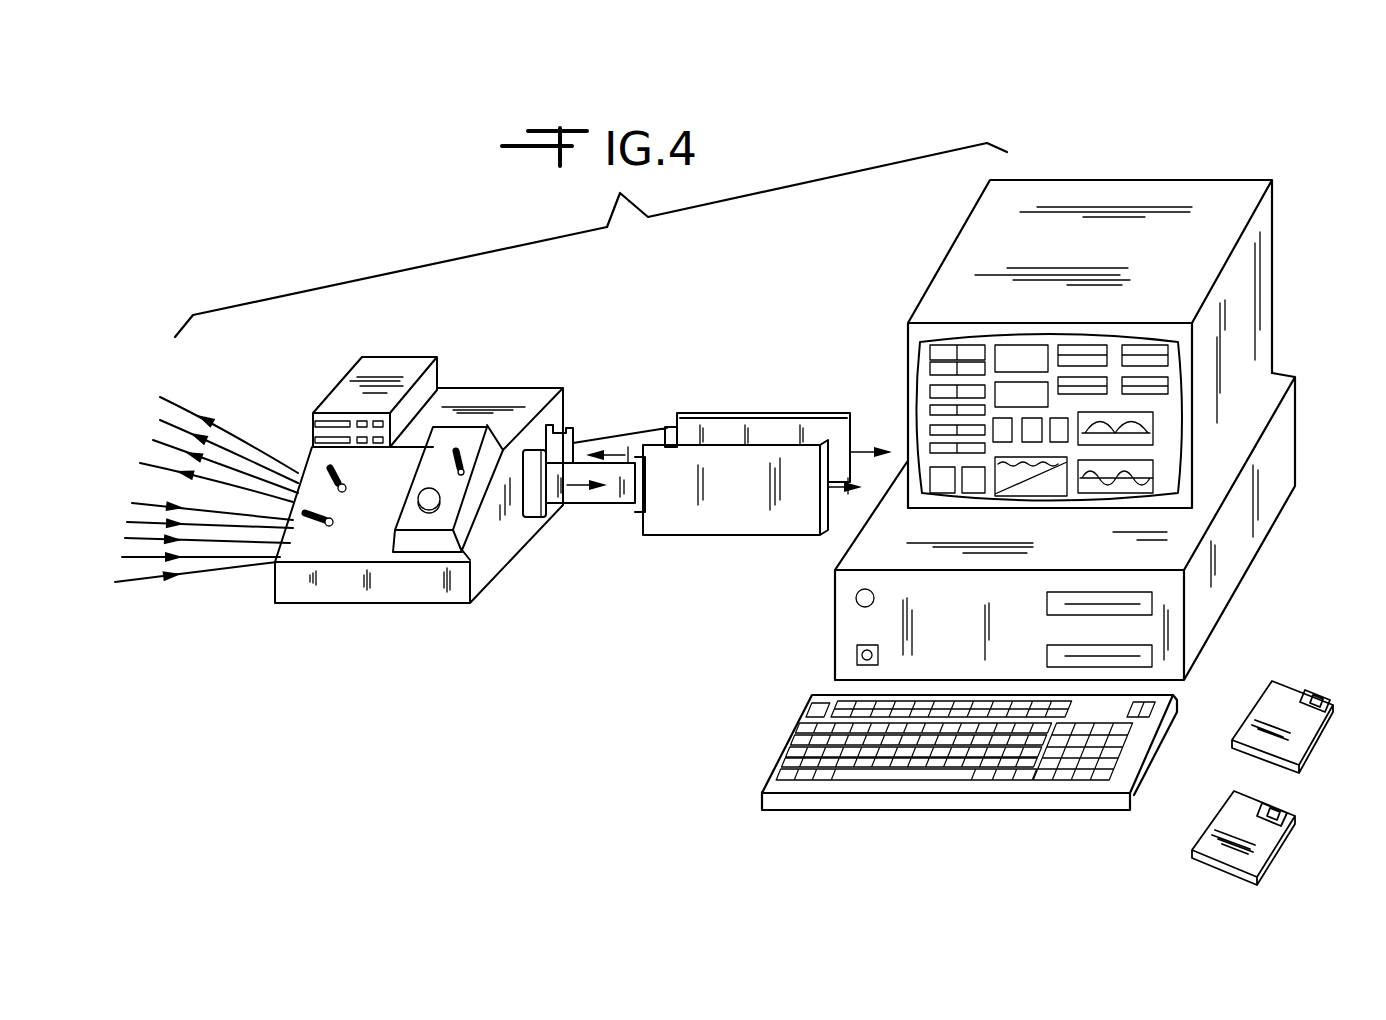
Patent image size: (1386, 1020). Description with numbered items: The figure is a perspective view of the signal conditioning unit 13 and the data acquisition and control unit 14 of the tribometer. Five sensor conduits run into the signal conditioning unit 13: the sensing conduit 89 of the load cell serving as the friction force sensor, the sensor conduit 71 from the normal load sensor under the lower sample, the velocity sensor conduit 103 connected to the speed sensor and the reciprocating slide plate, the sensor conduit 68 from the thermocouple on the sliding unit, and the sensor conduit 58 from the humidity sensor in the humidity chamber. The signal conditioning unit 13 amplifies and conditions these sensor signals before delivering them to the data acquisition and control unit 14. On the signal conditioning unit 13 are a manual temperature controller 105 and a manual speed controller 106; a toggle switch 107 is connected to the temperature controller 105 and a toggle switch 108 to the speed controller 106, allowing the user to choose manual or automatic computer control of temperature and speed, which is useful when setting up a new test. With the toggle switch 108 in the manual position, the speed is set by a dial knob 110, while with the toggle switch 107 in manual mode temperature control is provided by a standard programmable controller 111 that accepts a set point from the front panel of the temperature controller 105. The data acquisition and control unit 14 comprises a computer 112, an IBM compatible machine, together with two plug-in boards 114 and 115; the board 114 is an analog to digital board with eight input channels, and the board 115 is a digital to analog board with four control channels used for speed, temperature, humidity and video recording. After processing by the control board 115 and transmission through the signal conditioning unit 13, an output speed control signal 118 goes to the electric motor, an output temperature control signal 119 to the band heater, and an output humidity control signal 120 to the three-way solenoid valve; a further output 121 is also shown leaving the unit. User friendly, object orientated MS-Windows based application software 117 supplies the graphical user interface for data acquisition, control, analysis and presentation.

The signal conditioning unit 13 is at (477, 383).
The data acquisition and control unit 14 is at (921, 283).
The sensor conduit 58 is at (142, 584).
The sensor conduit 68 is at (120, 557).
The sensor conduit 71 is at (127, 521).
The sensing conduit 89 is at (144, 507).
The velocity sensor conduit 103 is at (127, 538).
The manual temperature controller 105 is at (393, 357).
The manual speed controller 106 is at (490, 427).
The toggle switch 107 is at (376, 480).
The toggle switch 108 is at (338, 540).
The dial knob 110 is at (424, 512).
The programmable controller 111 is at (313, 413).
The computer 112 is at (835, 620).
The plug-in board 114 is at (663, 537).
The plug-in board 115 is at (722, 413).
The application software 117 is at (1283, 682).
The output speed control signal 118 is at (184, 405).
The output temperature control signal 119 is at (160, 397).
The output humidity control signal 120 is at (160, 420).
The optical fiber 121 is at (142, 463).